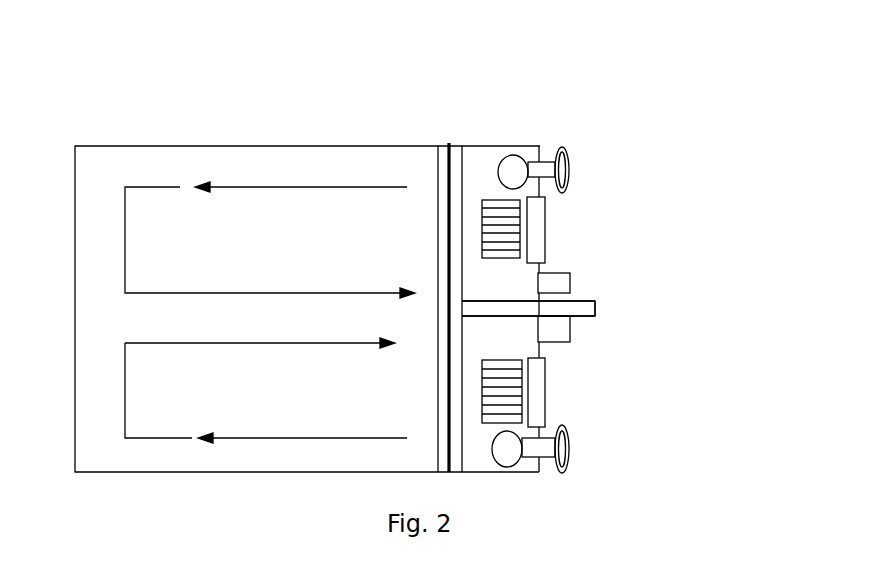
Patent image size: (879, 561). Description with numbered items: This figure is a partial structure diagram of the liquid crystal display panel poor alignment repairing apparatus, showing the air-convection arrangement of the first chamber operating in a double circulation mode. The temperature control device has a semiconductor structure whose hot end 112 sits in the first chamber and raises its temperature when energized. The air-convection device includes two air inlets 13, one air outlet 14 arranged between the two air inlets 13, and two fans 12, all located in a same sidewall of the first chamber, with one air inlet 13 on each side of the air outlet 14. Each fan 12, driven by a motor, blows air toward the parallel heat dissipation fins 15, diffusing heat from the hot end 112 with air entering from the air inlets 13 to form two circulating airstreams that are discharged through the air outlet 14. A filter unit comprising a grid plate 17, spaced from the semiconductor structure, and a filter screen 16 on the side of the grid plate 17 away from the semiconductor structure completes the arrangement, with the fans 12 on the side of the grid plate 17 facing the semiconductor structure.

The fan 12 is at (543, 168).
The hot end 112 is at (545, 223).
The air inlet 13 is at (570, 280).
The air outlet 14 is at (595, 308).
The heat dissipation fins 15 is at (513, 388).
The filter screen 16 is at (444, 190).
The grid plate 17 is at (448, 172).